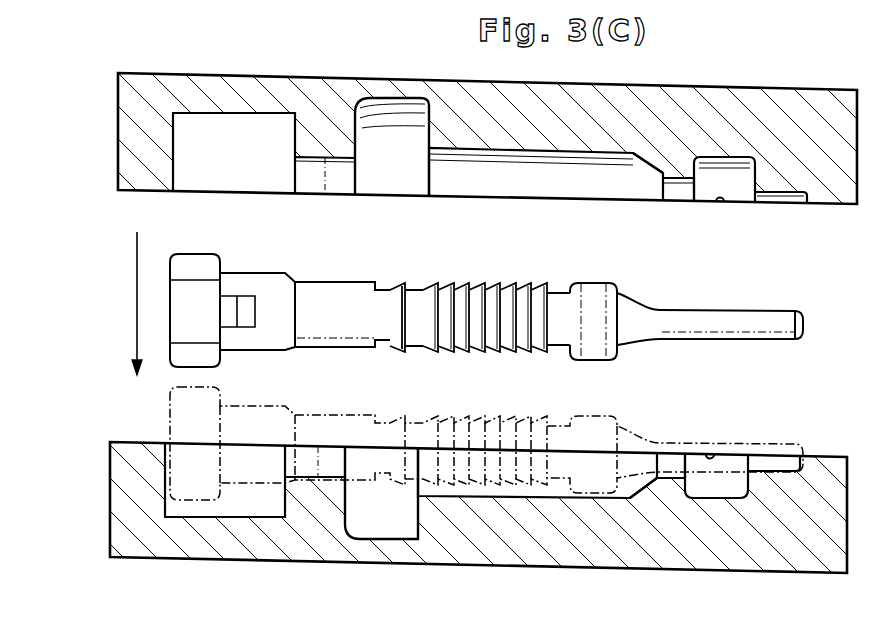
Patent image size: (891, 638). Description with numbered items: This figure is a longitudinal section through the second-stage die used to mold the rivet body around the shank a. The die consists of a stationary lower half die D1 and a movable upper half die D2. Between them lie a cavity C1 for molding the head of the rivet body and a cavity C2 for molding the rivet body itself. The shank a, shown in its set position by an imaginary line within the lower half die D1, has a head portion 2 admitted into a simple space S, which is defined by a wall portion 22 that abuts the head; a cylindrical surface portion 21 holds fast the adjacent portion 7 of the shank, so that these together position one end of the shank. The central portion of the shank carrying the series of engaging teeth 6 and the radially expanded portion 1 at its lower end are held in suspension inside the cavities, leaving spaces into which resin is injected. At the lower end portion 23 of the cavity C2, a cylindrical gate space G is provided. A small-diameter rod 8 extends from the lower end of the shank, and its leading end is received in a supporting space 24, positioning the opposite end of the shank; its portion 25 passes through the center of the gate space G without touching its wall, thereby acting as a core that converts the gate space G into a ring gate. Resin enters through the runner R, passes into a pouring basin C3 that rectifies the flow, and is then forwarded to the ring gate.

The space S is at (240, 133).
The cavity C1 is at (395, 125).
The cavity C2 is at (513, 170).
The pouring basin C3 is at (716, 178).
The lower half die D1 is at (805, 548).
The upper half die D2 is at (805, 116).
The head portion 2 is at (200, 295).
The surface portion 21 is at (326, 166).
The wall portion 22 is at (293, 175).
The lower end portion 23 is at (655, 190).
The supporting space 24 is at (787, 201).
The portion of small-diameter rod 25 is at (683, 325).
The gate space G is at (680, 190).
The runner R is at (722, 200).
The shank a is at (410, 279).
The engaging teeth 6 is at (475, 333).
The adjacent portion of shank 7 is at (343, 335).
The radially expanded portion 1 is at (595, 340).
The small-diameter rod 8 is at (785, 323).